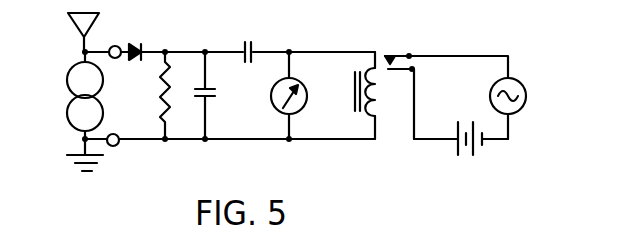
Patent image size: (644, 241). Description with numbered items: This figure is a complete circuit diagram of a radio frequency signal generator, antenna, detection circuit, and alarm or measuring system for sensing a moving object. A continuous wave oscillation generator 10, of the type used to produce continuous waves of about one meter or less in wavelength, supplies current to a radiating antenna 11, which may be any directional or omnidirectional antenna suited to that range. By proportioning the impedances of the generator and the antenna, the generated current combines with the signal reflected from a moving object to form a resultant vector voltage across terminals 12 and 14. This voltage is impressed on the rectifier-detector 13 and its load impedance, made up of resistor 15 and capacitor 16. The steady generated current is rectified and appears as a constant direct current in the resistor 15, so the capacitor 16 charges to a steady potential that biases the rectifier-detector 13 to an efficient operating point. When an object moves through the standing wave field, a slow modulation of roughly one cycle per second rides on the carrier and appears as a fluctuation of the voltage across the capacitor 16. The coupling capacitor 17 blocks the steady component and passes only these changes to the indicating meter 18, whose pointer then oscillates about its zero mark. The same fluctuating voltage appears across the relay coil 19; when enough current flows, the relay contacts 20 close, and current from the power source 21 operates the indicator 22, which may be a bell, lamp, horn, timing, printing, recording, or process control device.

The continuous wave oscillation generator 10 is at (66, 117).
The radiating antenna 11 is at (67, 30).
The terminal 12 is at (111, 47).
The rectifier-detector 13 is at (143, 47).
The terminal 14 is at (118, 146).
The resistor 15 is at (163, 115).
The capacitor 16 is at (211, 96).
The coupling capacitor 17 is at (255, 42).
The indicating meter 18 is at (305, 106).
The relay coil 19 is at (378, 103).
The relay contacts 20 is at (410, 54).
The power source 21 is at (457, 128).
The indicator 22 is at (525, 104).